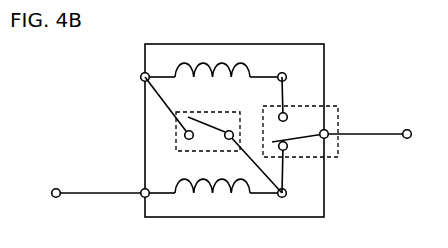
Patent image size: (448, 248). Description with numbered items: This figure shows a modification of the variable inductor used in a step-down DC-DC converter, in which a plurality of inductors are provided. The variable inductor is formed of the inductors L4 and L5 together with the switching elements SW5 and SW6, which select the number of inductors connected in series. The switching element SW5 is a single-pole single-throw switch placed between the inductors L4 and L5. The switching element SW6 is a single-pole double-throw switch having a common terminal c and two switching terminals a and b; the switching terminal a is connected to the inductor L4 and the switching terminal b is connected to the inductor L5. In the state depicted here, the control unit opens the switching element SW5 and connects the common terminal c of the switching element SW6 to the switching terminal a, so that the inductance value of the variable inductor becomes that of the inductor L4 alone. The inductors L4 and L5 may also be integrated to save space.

The inductor L5 is at (214, 63).
The inductor L4 is at (214, 196).
The switching element SW5 is at (213, 135).
The switching element SW6 is at (323, 135).
The switching terminal a is at (292, 150).
The switching terminal b is at (292, 118).
The common terminal c is at (329, 144).